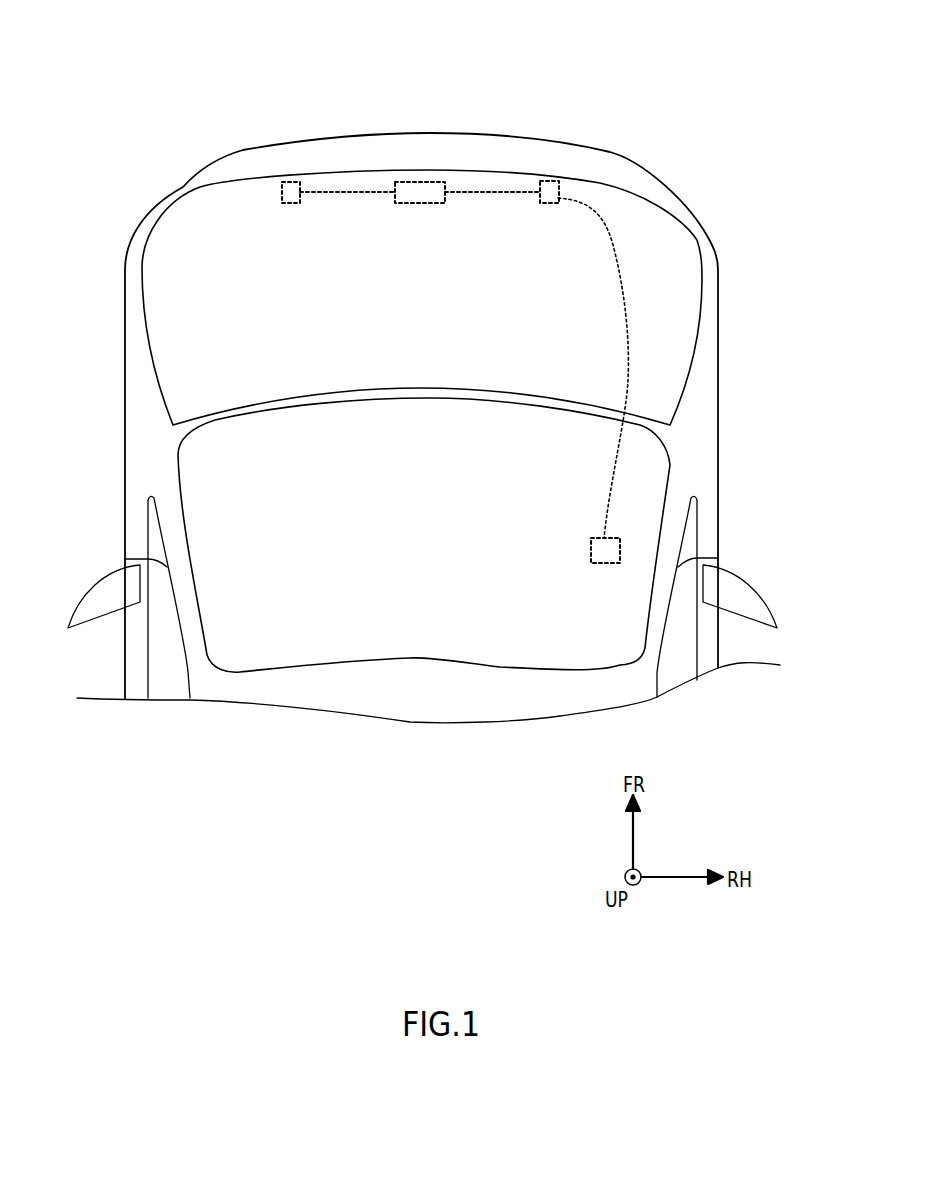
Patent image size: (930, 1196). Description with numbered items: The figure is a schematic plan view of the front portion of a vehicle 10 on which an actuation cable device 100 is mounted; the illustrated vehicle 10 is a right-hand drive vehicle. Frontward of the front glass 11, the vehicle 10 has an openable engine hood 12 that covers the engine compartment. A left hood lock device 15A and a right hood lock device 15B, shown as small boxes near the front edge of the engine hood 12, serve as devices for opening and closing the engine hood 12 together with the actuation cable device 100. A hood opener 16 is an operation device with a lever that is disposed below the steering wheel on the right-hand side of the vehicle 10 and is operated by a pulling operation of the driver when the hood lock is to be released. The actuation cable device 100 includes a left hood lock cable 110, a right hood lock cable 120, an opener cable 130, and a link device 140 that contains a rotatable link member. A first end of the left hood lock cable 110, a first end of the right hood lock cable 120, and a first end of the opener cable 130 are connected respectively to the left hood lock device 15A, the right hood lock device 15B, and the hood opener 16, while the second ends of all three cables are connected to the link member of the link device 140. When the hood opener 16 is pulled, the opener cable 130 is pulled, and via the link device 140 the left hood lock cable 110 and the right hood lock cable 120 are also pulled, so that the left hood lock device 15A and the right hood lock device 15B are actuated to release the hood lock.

The vehicle 10 is at (618, 116).
The front glass 11 is at (200, 466).
The engine hood 12 is at (163, 303).
The left hood lock device 15A is at (280, 186).
The right hood lock device 15B is at (553, 184).
The hood opener 16 is at (620, 545).
The actuation cable device 100 is at (300, 150).
The left hood lock cable 110 is at (352, 190).
The right hood lock cable 120 is at (497, 195).
The opener cable 130 is at (615, 248).
The link device 140 is at (423, 190).